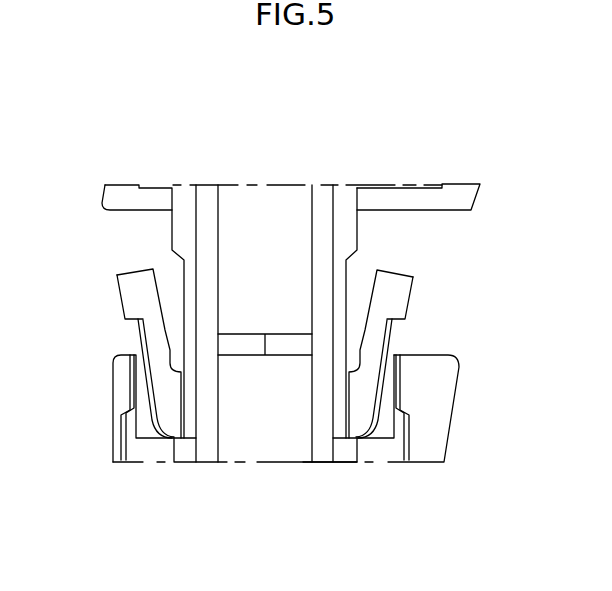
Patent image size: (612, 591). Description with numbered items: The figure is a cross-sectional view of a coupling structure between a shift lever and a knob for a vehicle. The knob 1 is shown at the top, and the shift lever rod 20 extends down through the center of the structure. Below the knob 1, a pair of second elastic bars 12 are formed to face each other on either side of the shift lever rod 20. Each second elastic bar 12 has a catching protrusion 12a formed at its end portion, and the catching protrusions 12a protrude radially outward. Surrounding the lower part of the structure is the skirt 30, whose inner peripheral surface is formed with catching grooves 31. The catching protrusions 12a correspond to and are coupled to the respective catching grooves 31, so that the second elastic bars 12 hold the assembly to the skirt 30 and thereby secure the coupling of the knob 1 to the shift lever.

The knob 1 is at (453, 202).
The shift lever rod 20 is at (318, 223).
The catching protrusion 12a is at (123, 290).
The second elastic bar 12 is at (157, 370).
The skirt 30 is at (442, 392).
The catching groove 31 is at (122, 438).